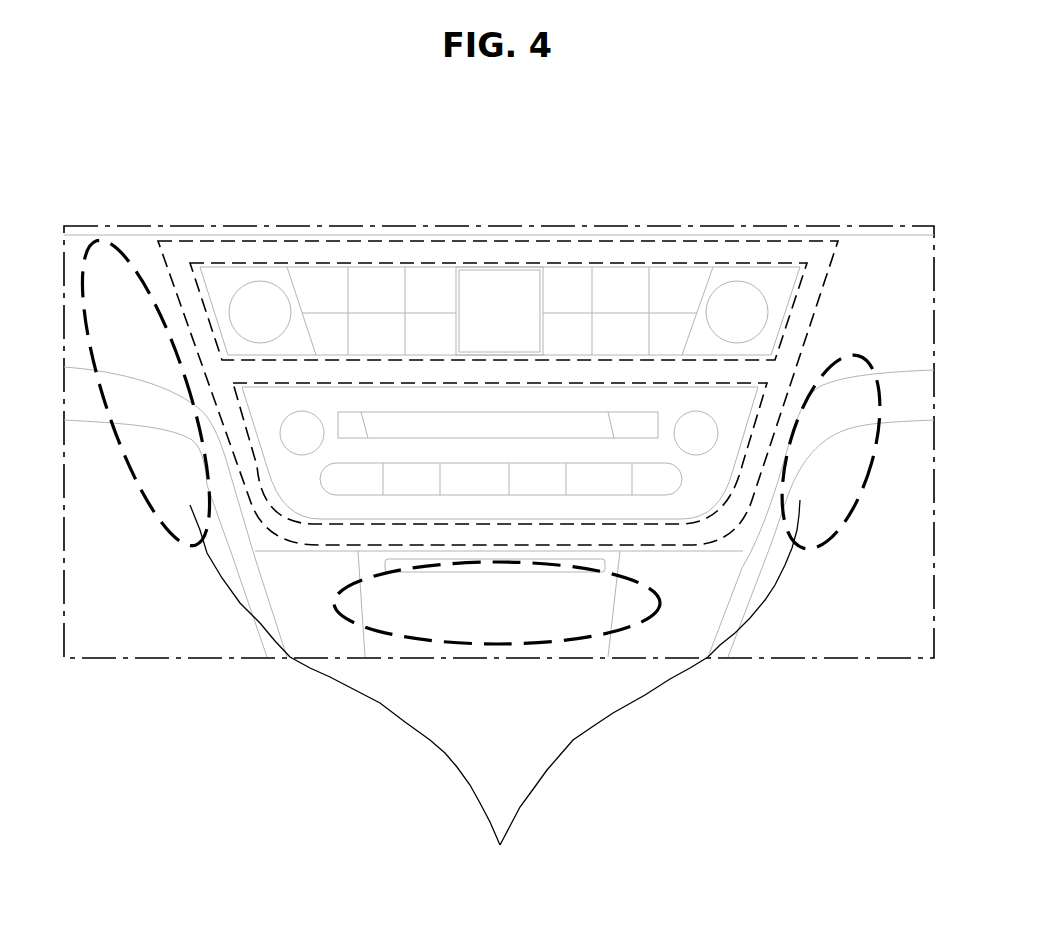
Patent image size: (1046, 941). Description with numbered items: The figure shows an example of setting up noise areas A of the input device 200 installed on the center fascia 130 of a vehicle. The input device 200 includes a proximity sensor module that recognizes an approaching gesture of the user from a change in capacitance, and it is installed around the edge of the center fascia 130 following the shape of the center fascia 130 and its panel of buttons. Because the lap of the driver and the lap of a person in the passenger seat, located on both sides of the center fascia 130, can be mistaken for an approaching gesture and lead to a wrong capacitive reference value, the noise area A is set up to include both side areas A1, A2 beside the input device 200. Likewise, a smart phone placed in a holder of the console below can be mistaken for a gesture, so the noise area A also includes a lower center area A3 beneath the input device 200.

The input device 200 is at (671, 240).
The center fascia 130 is at (793, 302).
The side area A1 is at (200, 498).
The side area A2 is at (800, 500).
The lower center area A3 is at (646, 590).
The noise area A is at (517, 615).